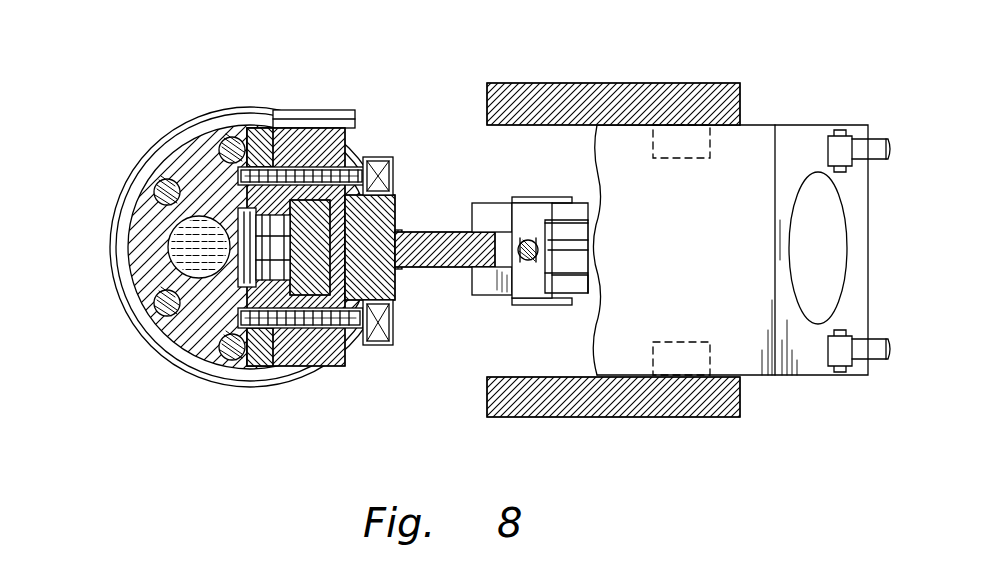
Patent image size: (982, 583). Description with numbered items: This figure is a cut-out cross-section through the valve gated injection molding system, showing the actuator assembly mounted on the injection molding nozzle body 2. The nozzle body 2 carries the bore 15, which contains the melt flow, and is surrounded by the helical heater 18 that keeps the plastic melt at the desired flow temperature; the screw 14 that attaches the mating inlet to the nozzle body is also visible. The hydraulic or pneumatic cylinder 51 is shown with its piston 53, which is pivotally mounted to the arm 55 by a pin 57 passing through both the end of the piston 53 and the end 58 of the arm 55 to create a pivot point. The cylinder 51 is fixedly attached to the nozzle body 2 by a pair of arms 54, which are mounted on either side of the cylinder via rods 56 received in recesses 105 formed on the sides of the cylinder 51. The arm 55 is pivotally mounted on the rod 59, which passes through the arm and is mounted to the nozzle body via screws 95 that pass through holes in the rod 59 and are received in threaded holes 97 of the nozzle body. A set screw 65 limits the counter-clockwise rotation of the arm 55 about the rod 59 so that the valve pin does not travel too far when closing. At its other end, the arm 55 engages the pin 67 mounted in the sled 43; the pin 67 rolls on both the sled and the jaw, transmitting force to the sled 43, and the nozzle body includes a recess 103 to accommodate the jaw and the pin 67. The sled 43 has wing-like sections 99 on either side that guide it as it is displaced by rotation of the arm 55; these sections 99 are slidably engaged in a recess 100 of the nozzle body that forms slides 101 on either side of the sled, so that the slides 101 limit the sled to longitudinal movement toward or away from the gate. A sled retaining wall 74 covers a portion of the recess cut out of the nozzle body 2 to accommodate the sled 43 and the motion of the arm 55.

The injection molding nozzle body 2 is at (177, 357).
The screw 14 is at (228, 140).
The bore 15 is at (180, 263).
The helical heater 18 is at (130, 180).
The sled 43 is at (385, 210).
The hydraulic or pneumatic cylinder 51 is at (808, 145).
The piston 53 is at (573, 245).
The arms 54 is at (650, 105).
The arm 55 is at (412, 232).
The rods 56 is at (715, 135).
The pin 57 is at (522, 200).
The end of the arm 58 is at (588, 293).
The rod 59 is at (390, 293).
The set screw 65 is at (528, 245).
The pin 67 is at (250, 210).
The sled retaining wall 74 is at (290, 200).
The screws 95 is at (393, 172).
The threaded holes 97 is at (255, 168).
The wing-like sections 99 is at (325, 170).
The recess 100 is at (303, 170).
The slides 101 is at (215, 185).
The recess 103 is at (240, 290).
The recesses 105 is at (720, 150).